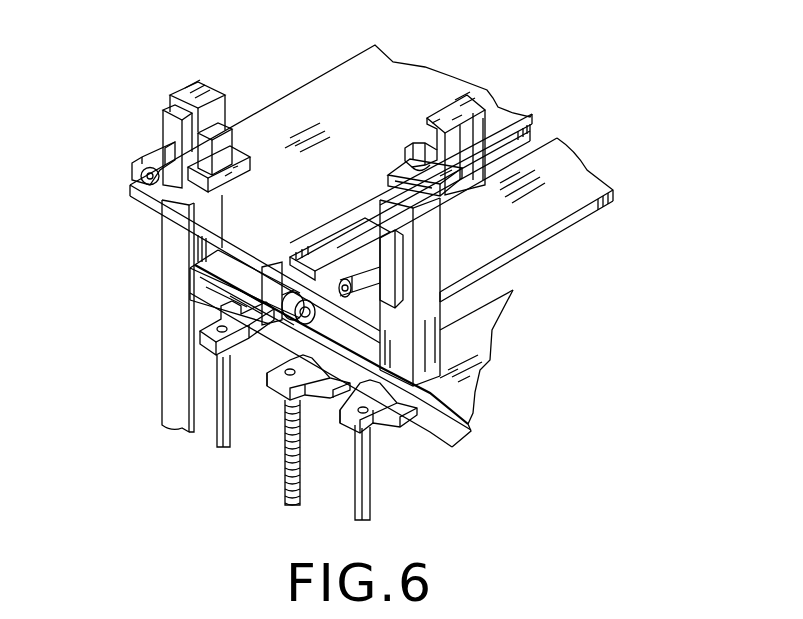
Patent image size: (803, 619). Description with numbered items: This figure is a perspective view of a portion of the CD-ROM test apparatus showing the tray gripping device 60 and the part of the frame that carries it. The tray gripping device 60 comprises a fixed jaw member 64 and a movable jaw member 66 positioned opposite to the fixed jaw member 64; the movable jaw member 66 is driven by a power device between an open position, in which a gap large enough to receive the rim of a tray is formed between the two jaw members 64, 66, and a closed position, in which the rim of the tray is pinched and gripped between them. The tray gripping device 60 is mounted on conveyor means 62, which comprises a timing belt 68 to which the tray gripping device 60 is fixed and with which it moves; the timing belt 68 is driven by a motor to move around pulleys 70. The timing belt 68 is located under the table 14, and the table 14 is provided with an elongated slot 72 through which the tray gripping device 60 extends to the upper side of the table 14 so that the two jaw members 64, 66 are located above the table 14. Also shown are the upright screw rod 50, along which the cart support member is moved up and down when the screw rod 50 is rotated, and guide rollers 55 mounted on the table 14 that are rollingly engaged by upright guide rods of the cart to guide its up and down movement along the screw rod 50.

The table 14 is at (577, 180).
The screw rod 50 is at (288, 492).
The guide roller 55 is at (133, 181).
The tray gripping device 60 is at (486, 86).
The conveyor means 62 is at (200, 335).
The fixed jaw member 64 is at (401, 162).
The movable jaw member 66 is at (412, 143).
The timing belt 68 is at (322, 312).
The pulley 70 is at (318, 312).
The elongated slot 72 is at (537, 136).